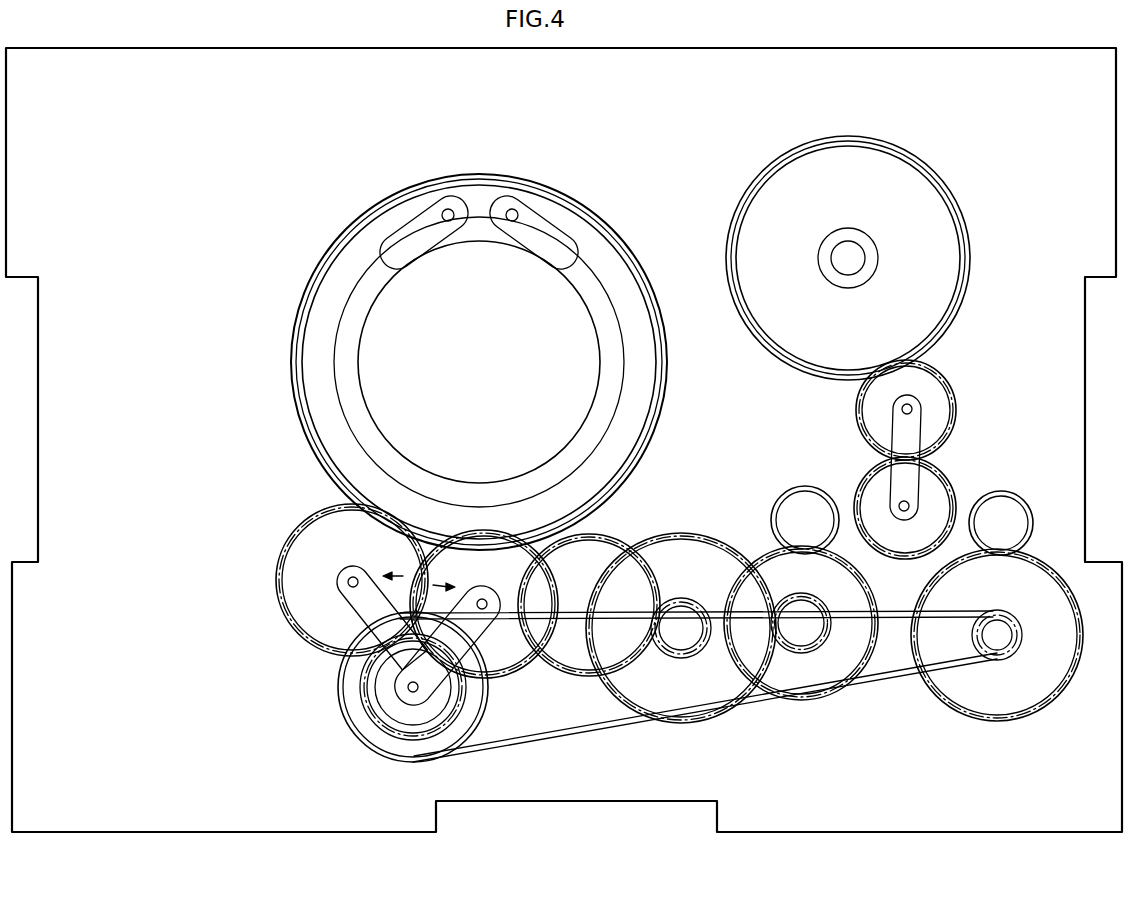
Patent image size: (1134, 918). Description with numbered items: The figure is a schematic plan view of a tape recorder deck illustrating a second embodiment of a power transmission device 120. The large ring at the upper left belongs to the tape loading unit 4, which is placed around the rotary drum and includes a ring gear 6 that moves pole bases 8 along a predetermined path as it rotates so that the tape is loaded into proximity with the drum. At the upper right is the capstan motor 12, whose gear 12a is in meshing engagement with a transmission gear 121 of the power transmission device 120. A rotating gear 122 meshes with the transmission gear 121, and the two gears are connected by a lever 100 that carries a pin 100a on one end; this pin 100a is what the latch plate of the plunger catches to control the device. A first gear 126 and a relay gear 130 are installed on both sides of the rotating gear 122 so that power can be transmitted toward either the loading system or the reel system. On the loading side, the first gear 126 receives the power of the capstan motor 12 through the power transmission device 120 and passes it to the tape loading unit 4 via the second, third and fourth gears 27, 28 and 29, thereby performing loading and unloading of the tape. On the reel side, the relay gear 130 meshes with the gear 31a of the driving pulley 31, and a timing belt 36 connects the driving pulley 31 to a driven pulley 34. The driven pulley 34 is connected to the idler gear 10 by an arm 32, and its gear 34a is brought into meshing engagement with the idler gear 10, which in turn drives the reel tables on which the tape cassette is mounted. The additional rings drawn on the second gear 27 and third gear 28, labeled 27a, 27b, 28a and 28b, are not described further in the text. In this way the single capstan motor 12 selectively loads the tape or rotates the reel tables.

The tape loading unit 4 is at (300, 304).
The ring gear 6 is at (626, 236).
The pole bases 8 is at (528, 185).
The idler gear 10 is at (297, 552).
The capstan motor 12 is at (944, 240).
The gear of the capstan motor 12a is at (940, 192).
The second gear 27 is at (807, 707).
The gear ring 27a is at (830, 645).
The gear hub 27b is at (872, 663).
The third gear 28 is at (686, 717).
The gear ring 28a is at (717, 713).
The gear hub 28b is at (660, 598).
The fourth gear 29 is at (563, 660).
The driving pulley 31 is at (1007, 642).
The gear of the driving pulley 31a is at (1003, 682).
The arm 32 is at (450, 692).
The driven pulley 34 is at (352, 683).
The gear of the driven pulley 34a is at (370, 717).
The timing belt 36 is at (607, 728).
The lever 100 is at (901, 438).
The pin 100a is at (909, 503).
The power transmission device 120 is at (947, 463).
The transmission gear 121 is at (942, 380).
The rotating gear 122 is at (896, 542).
The first gear 126 is at (800, 494).
The relay gear 130 is at (1018, 530).